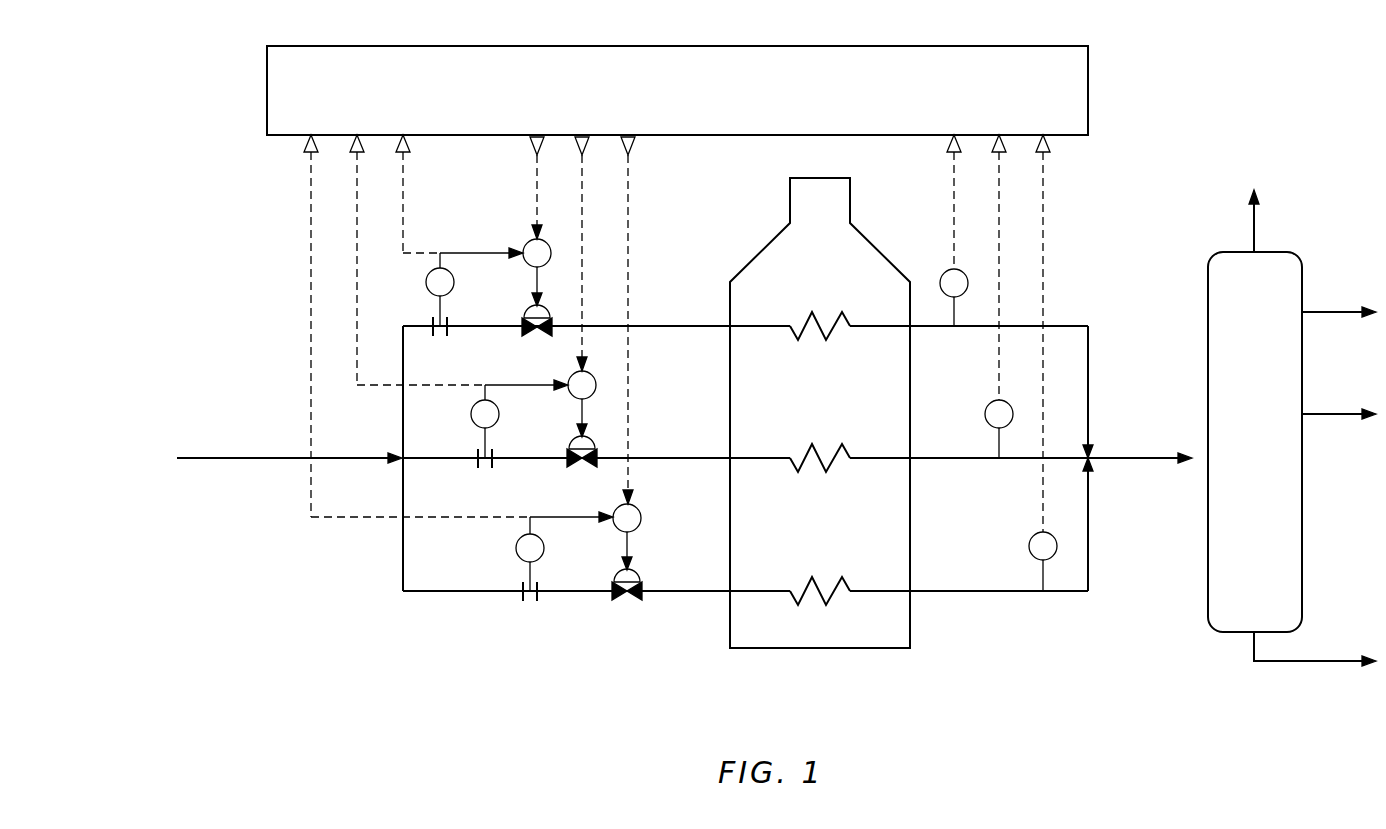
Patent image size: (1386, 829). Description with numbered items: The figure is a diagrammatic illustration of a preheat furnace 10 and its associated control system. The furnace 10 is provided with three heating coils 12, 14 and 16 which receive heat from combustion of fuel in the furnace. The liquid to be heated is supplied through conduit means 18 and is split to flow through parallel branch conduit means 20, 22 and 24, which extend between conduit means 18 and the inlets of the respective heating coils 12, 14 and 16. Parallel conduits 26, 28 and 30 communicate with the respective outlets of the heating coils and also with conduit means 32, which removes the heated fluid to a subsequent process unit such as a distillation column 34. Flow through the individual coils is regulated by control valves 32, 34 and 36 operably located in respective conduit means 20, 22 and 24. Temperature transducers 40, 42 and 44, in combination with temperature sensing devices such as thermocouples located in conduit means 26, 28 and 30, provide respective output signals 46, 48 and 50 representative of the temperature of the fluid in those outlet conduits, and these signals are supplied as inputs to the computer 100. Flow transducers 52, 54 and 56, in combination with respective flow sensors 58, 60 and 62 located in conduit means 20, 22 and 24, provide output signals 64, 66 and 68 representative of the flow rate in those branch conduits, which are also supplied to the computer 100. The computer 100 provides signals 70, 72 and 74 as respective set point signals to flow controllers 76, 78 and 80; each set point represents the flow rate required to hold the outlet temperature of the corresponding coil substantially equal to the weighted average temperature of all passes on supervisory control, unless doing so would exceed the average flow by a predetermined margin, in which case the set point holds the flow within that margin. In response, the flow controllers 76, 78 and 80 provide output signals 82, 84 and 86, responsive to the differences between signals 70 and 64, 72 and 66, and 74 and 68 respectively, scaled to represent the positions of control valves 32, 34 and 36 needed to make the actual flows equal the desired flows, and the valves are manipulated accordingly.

The furnace 10 is at (832, 292).
The heating coil 12 is at (797, 341).
The heating coil 14 is at (797, 473).
The heating coil 16 is at (841, 577).
The conduit means 18 is at (283, 458).
The branch conduit means 20 is at (683, 326).
The branch conduit means 22 is at (683, 458).
The branch conduit means 24 is at (683, 591).
The parallel conduit 26 is at (1073, 326).
The parallel conduit 28 is at (945, 462).
The parallel conduit 30 is at (950, 594).
The conduit means / control valve 32 is at (545, 336).
The distillation column / control valve 34 is at (590, 467).
The control valve 36 is at (615, 602).
The temperature transducer 40 is at (943, 271).
The temperature transducer 42 is at (986, 402).
The temperature transducer 44 is at (1031, 535).
The output signal 46 is at (954, 180).
The output signal 48 is at (999, 207).
The output signal 50 is at (1043, 180).
The flow transducer 52 is at (423, 282).
The flow transducer 54 is at (471, 414).
The flow transducer 56 is at (515, 548).
The flow sensor 58 is at (440, 338).
The flow sensor 60 is at (478, 468).
The flow sensor 62 is at (523, 602).
The output signal 64 is at (403, 178).
The output signal 66 is at (383, 386).
The output signal 68 is at (311, 178).
The set point signal 70 is at (537, 205).
The set point signal 72 is at (582, 186).
The set point signal 74 is at (628, 200).
The flow controller 76 is at (547, 266).
The flow controller 78 is at (592, 396).
The flow controller 80 is at (641, 514).
The output signal 82 is at (536, 283).
The output signal 84 is at (582, 414).
The output signal 86 is at (627, 548).
The computer 100 is at (1088, 92).